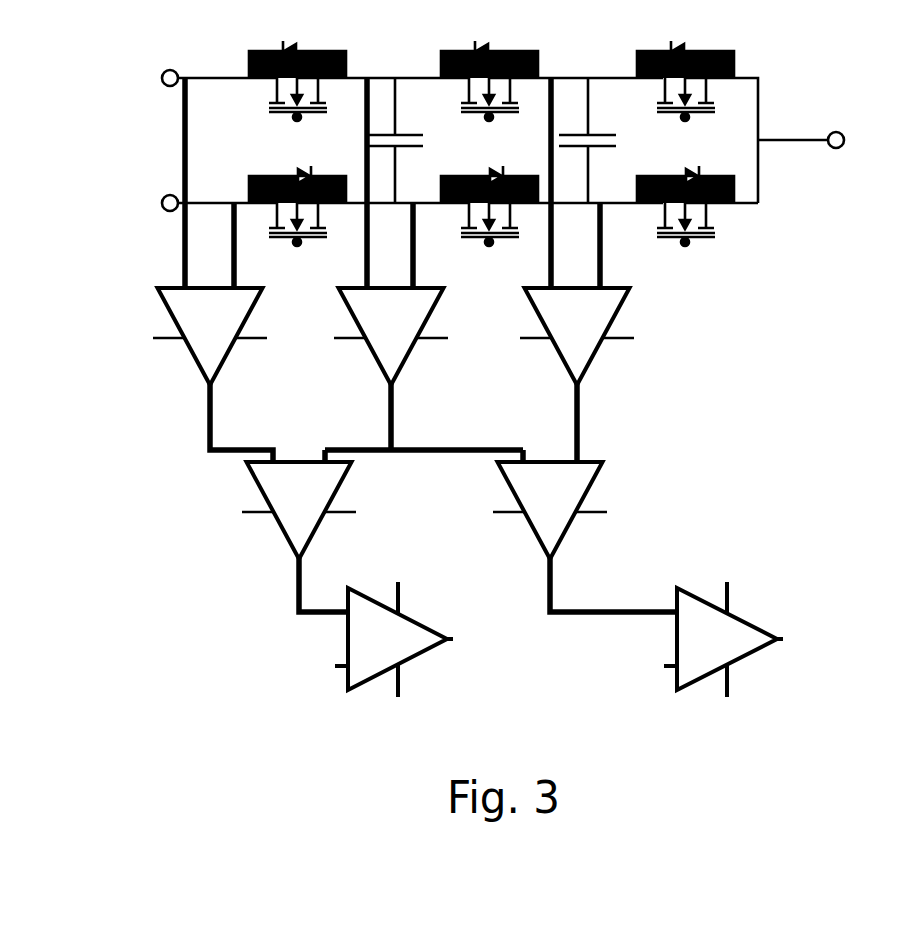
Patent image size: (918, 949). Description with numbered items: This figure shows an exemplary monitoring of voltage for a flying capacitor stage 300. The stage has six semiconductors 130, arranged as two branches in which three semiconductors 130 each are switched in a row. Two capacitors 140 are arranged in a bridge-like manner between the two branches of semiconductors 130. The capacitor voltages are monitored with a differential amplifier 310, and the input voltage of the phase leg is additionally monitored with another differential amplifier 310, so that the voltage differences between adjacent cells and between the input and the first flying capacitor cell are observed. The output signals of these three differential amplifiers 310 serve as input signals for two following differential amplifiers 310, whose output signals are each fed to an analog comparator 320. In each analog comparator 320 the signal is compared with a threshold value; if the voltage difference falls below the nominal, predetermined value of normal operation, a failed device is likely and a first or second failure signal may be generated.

The semiconductor 130 is at (491, 146).
The capacitor 140 is at (500, 140).
The monitoring circuit 300 is at (448, 385).
The differential amplifier 310 is at (446, 447).
The analog comparator 320 is at (534, 668).